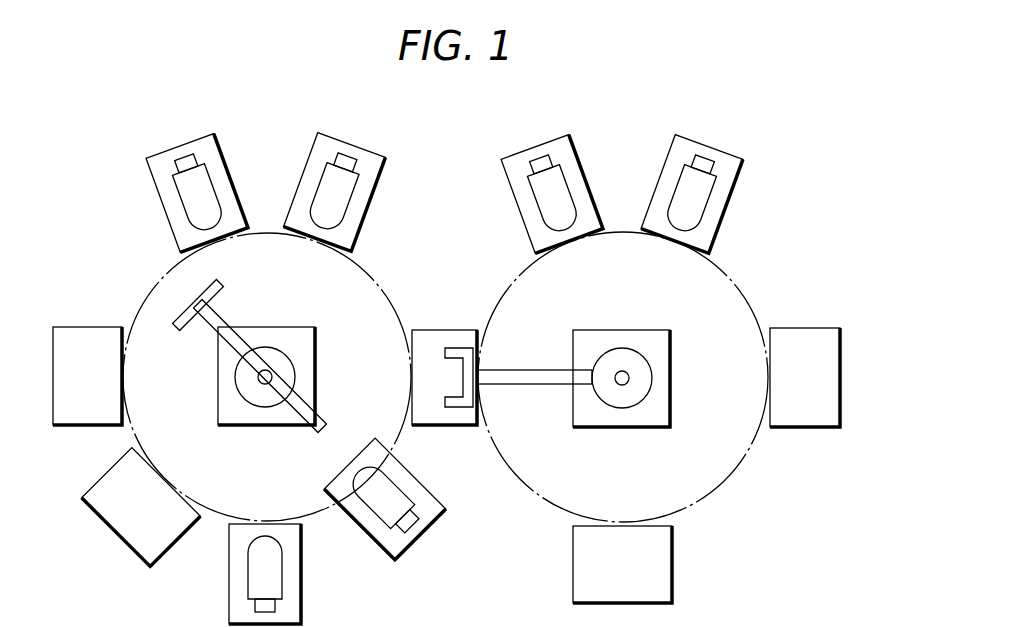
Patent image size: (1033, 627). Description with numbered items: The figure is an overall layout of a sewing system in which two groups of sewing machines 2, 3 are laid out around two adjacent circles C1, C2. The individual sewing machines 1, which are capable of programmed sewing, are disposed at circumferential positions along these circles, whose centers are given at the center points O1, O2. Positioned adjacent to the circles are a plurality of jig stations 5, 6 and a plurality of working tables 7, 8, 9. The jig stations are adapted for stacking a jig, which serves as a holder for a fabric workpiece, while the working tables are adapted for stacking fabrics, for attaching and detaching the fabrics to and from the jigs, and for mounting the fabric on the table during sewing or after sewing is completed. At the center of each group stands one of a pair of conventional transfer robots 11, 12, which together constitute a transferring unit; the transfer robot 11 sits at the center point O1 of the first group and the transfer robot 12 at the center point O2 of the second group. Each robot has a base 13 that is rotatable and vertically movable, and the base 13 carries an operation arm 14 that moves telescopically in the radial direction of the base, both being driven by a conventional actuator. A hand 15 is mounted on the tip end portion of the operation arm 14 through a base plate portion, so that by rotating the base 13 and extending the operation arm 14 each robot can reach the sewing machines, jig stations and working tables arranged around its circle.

The sewing machine 1 is at (178, 186).
The group of sewing machines 2 is at (358, 134).
The group of sewing machines 3 is at (627, 137).
The jig station 5 is at (117, 522).
The jig station 6 is at (655, 570).
The working table 7 is at (78, 345).
The working table 8 is at (428, 342).
The working table 9 is at (805, 342).
The transfer robot 11 is at (312, 363).
The transfer robot 12 is at (665, 345).
The base 13 is at (270, 357).
The operation arm 14 is at (215, 330).
The hand 15 is at (226, 288).
The circle C1 is at (153, 273).
The circle C2 is at (745, 280).
The center point O1 is at (265, 386).
The center point O2 is at (622, 386).